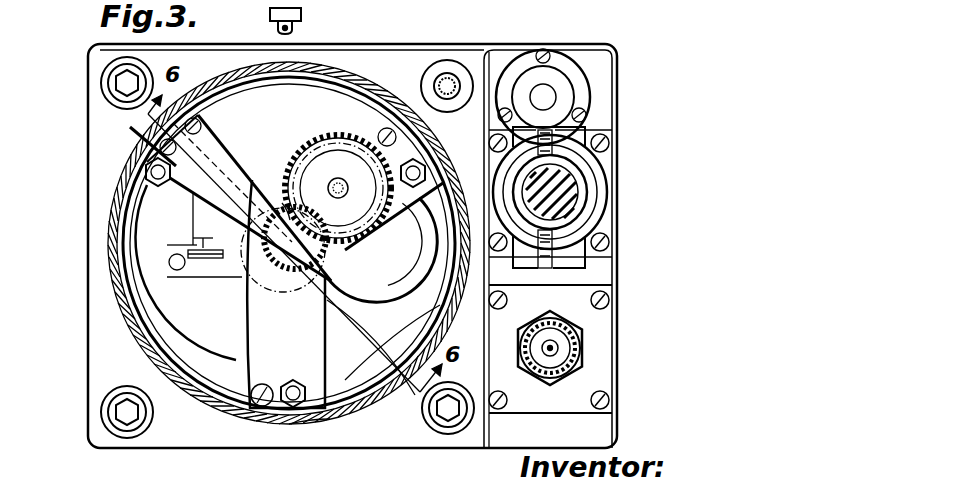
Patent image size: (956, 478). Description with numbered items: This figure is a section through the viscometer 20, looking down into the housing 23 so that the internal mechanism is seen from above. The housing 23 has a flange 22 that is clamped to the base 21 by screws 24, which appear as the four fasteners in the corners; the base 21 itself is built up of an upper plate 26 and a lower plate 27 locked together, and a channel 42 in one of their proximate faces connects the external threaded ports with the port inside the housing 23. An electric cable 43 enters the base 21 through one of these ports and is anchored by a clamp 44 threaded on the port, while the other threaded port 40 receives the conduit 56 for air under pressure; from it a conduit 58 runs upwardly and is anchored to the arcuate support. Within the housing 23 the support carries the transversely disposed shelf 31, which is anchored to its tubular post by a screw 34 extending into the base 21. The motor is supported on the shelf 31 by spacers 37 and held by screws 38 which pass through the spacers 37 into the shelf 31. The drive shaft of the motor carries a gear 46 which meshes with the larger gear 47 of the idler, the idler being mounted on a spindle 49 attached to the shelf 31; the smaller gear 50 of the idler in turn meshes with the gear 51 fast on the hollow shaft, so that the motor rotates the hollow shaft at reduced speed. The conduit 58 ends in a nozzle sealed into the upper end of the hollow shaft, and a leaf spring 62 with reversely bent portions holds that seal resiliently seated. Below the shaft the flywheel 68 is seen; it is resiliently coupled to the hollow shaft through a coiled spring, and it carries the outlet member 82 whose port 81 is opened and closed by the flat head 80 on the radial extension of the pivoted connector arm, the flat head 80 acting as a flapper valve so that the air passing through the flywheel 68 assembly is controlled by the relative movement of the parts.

The viscometer 20 is at (106, 313).
The base 21 is at (84, 371).
The flange 22 is at (95, 168).
The housing 23 is at (108, 248).
The screws 24 is at (118, 84).
The upper plate 26 is at (88, 0).
The lower plate 27 is at (73, 26).
The shelf 31 is at (263, 365).
The screw 34 is at (262, 406).
The spacers 37 is at (322, 419).
The screws 38 is at (150, 165).
The threaded port 40 is at (560, 348).
The channel 42 is at (449, 8).
The electric cable 43 is at (572, 190).
The clamp 44 is at (600, 207).
The gear 46 is at (306, 278).
The larger gear 47 is at (300, 155).
The spindle 49 is at (340, 182).
The smaller gear 50 is at (320, 147).
The gear 51 is at (282, 203).
The conduit 56 is at (583, 335).
The conduit 58 is at (417, 280).
The leaf spring 62 is at (253, 282).
The flywheel 68 is at (192, 302).
The flat head 80 is at (173, 272).
The port 81 is at (200, 247).
The outlet member 82 is at (195, 232).